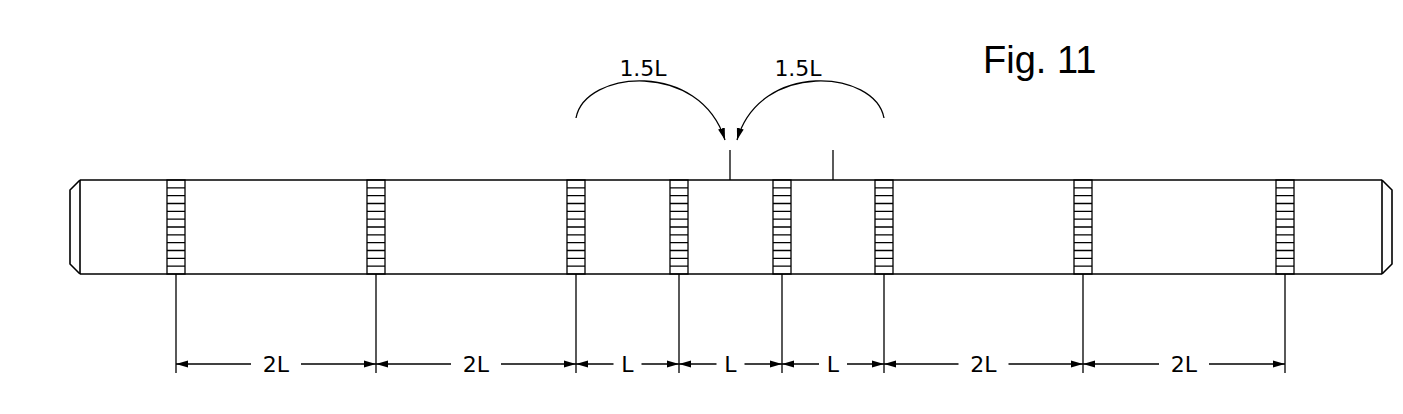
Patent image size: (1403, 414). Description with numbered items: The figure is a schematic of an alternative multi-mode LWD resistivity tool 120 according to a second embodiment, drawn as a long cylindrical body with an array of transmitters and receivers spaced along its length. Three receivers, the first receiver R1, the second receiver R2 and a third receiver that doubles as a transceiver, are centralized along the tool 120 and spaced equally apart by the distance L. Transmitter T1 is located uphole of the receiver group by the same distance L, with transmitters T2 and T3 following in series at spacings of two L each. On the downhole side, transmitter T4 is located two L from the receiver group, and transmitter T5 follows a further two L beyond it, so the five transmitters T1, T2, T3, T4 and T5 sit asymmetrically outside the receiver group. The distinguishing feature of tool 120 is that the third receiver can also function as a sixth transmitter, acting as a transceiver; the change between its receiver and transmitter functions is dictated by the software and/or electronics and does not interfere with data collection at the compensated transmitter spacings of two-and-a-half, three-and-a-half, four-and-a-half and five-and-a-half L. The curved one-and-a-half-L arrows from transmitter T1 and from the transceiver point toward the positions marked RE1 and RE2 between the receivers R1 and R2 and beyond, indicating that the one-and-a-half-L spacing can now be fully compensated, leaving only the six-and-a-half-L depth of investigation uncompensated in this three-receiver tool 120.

The alternative resistivity tool 120 is at (447, 95).
The transmitter T1 is at (576, 118).
The transmitter T2 is at (376, 122).
The transmitter T3 is at (176, 122).
The transmitter T4 is at (1083, 122).
The transmitter T5 is at (1285, 122).
The receiver R1 is at (679, 122).
The receiver R2 is at (782, 122).
The receiver equivalent position RE1 is at (730, 274).
The receiver equivalent position RE2 is at (833, 274).